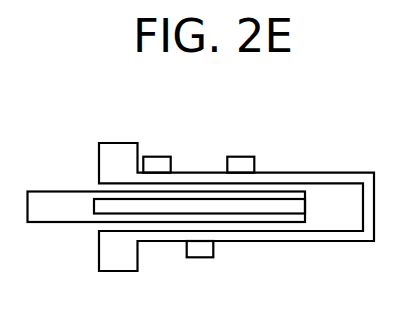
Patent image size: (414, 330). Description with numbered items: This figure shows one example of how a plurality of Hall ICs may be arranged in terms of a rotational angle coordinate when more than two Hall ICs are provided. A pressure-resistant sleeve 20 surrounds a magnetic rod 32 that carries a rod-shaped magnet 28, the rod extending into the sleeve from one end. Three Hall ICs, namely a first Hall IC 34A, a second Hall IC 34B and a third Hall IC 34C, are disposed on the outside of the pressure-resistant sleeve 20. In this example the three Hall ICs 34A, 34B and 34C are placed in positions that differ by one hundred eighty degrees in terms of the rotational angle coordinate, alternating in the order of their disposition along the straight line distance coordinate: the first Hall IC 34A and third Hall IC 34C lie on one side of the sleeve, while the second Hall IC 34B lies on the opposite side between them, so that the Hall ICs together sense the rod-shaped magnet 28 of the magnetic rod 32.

The pressure-resistant sleeve 20 is at (123, 260).
The magnetic rod 32 is at (100, 192).
The rod-shaped magnet 28 is at (277, 209).
The first Hall IC 34A is at (152, 157).
The second Hall IC 34B is at (208, 258).
The third Hall IC 34C is at (240, 157).